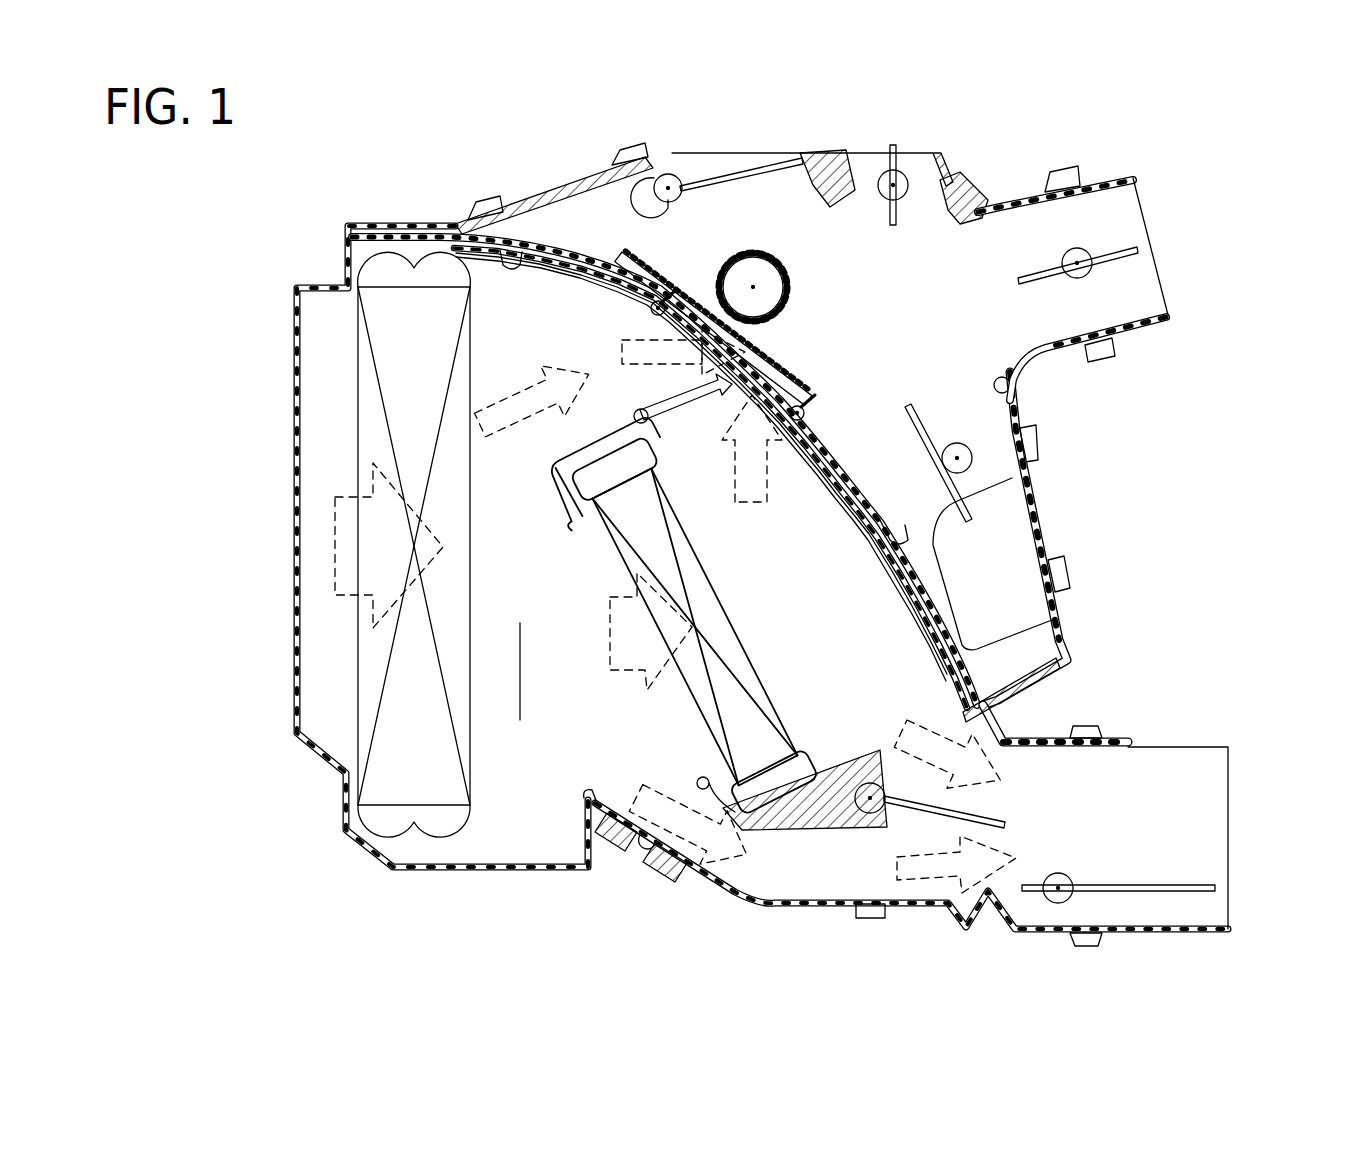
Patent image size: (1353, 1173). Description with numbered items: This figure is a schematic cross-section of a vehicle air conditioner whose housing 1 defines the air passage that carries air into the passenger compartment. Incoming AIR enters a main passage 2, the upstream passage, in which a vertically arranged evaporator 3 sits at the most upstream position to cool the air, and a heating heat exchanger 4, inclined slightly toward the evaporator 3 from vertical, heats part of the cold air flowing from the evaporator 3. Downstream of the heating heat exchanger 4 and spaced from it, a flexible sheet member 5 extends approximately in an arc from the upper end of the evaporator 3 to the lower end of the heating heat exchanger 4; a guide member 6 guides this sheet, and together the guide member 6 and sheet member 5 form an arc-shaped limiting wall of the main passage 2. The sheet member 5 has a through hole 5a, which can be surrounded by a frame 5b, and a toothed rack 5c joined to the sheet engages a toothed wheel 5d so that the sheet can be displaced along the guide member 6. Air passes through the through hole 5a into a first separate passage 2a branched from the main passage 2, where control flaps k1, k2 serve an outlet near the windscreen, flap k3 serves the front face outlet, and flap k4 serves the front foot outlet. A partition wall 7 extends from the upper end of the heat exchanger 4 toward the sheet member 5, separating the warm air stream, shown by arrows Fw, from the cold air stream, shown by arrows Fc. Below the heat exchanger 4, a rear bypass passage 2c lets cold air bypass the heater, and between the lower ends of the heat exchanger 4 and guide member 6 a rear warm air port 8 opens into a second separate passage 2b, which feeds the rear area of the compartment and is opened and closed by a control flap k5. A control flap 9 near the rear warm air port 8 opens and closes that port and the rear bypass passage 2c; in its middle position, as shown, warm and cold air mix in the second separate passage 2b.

The air conditioner housing 1 is at (525, 200).
The main passage 2 is at (520, 720).
The first separate passage 2a is at (937, 272).
The second separate passage 2b is at (1072, 795).
The rear bypass passage 2c is at (782, 858).
The evaporator 3 is at (395, 365).
The heating heat exchanger 4 is at (760, 700).
The flexible sheet member 5 is at (830, 440).
The through hole 5a is at (790, 405).
The frame 5b is at (628, 303).
The toothed rack 5c is at (655, 272).
The toothed wheel 5d is at (762, 275).
The guide member 6 is at (555, 240).
The partition wall 7 is at (680, 395).
The rear warm air port 8 is at (1000, 692).
The control flap 9 is at (912, 810).
The control flap k1 is at (705, 185).
The control flap k2 is at (897, 172).
The control flap k3 is at (1085, 265).
The control flap k4 is at (962, 462).
The control flap k5 is at (1180, 890).
The air flow AIR is at (335, 570).
The cold air stream arrows Fc is at (490, 420).
The warm air stream arrows Fw is at (765, 495).